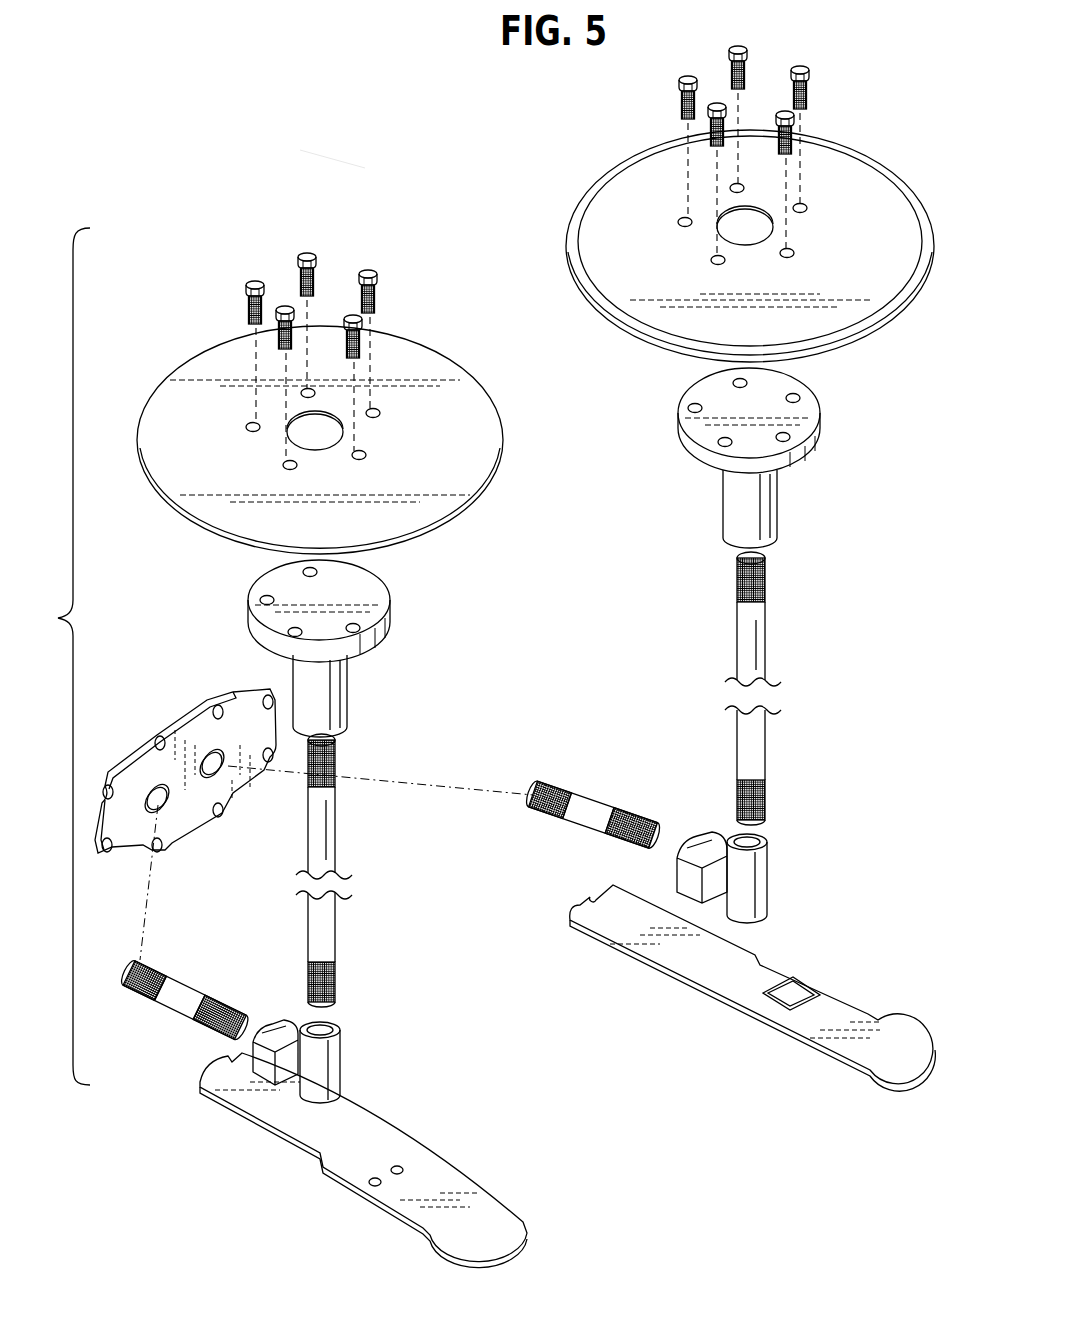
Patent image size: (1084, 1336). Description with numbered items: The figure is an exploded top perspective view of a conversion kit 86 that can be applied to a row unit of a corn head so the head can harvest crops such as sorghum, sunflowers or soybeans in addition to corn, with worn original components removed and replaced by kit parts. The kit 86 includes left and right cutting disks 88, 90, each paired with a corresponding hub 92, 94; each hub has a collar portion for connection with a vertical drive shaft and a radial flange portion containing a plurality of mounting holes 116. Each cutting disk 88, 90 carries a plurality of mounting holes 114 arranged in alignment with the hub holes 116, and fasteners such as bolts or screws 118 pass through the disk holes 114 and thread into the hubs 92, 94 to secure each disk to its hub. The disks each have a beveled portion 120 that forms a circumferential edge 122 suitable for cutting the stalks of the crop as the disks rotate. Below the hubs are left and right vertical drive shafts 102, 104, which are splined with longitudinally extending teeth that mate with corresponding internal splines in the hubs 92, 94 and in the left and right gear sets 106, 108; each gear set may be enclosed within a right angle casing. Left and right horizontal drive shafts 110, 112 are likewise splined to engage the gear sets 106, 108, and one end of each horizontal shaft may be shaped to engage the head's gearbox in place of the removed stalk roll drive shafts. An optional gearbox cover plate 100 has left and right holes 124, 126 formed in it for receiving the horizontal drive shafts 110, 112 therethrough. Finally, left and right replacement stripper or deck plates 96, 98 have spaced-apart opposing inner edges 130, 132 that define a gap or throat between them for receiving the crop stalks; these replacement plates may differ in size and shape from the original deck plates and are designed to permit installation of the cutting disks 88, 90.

The conversion kit 86 is at (360, 166).
The left cutting disk 88 is at (862, 182).
The right cutting disk 90 is at (158, 410).
The hub 92 is at (797, 402).
The hub 94 is at (372, 586).
The left replacement deck plate 96 is at (764, 966).
The right replacement deck plate 98 is at (385, 1142).
The gearbox cover plate 100 is at (196, 732).
The left vertical drive shaft 102 is at (775, 643).
The right vertical drive shaft 104 is at (352, 828).
The left gear set 106 is at (778, 864).
The right gear set 108 is at (350, 1055).
The left horizontal drive shaft 110 is at (556, 835).
The right horizontal drive shaft 112 is at (180, 1030).
The mounting holes 114 is at (678, 221).
The mounting holes 116 is at (720, 445).
The screws 118 is at (803, 66).
The beveled portion 120 is at (898, 300).
The circumferential edge 122 is at (832, 350).
The left hole 124 is at (212, 750).
The right hole 126 is at (155, 786).
The inner edge 130 is at (770, 1030).
The inner edge 132 is at (470, 1178).